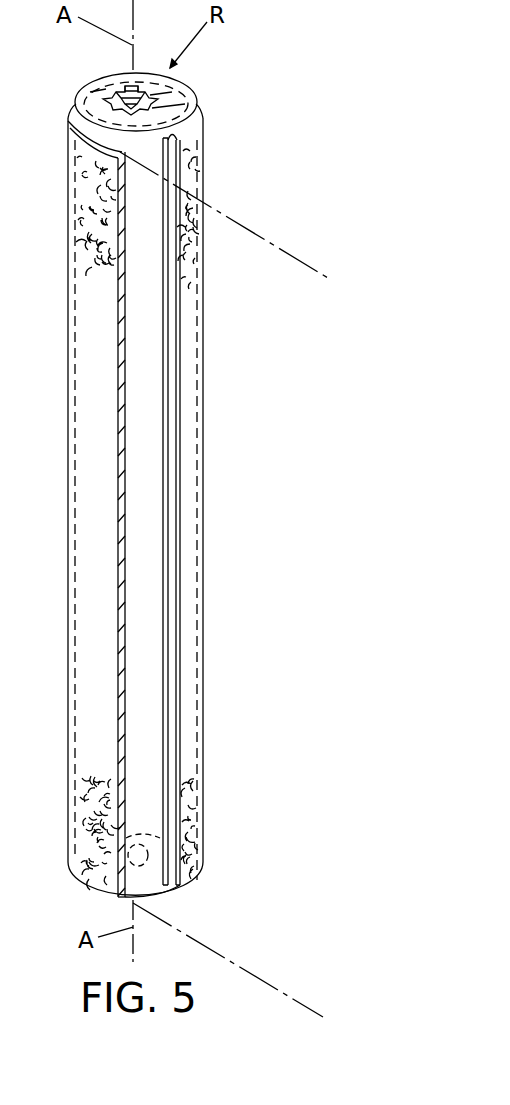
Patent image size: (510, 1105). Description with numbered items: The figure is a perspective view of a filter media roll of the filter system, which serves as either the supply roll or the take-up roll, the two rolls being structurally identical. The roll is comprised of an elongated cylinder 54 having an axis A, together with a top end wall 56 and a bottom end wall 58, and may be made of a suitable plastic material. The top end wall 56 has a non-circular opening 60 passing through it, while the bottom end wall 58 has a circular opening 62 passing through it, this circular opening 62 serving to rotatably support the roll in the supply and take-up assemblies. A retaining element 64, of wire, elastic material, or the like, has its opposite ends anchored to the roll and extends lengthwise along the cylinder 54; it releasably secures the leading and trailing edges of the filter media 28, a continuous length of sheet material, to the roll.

The filter media 28 is at (204, 290).
The elongated cylinder 54 is at (150, 478).
The top end wall 56 is at (175, 100).
The bottom end wall 58 is at (168, 897).
The non-circular opening 60 is at (138, 88).
The circular opening 62 is at (182, 842).
The retaining element 64 is at (177, 640).